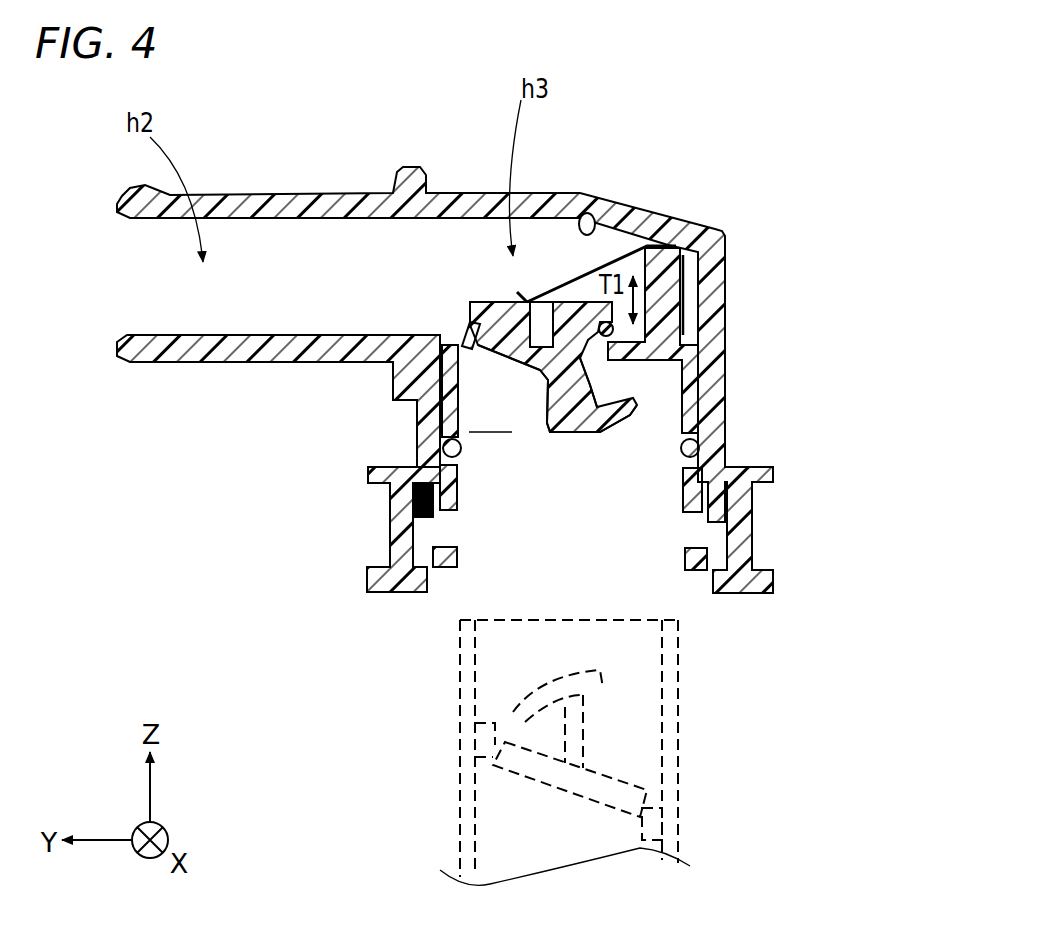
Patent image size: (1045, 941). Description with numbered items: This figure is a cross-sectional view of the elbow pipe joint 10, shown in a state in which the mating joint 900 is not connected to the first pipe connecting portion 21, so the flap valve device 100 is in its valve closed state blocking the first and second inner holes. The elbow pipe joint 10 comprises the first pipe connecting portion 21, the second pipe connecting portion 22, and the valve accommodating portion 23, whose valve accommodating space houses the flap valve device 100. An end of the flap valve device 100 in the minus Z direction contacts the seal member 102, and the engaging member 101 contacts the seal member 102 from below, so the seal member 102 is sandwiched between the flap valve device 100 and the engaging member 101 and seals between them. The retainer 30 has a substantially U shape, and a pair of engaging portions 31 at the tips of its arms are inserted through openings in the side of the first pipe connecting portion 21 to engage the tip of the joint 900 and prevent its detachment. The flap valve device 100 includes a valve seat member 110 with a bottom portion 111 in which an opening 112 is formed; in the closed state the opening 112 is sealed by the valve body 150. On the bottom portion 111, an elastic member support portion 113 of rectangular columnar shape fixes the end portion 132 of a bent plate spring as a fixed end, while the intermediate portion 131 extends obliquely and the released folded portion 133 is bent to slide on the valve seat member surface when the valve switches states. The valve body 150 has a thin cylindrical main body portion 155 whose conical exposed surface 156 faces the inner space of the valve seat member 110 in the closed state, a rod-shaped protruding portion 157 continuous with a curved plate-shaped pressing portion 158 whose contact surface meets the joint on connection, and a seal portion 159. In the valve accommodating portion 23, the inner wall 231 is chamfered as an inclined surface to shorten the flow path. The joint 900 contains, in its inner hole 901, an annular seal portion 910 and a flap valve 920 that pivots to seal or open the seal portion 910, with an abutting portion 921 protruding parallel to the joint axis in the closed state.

The elbow pipe joint 10 is at (478, 347).
The first pipe connecting portion 21 is at (762, 511).
The second pipe connecting portion 22 is at (229, 193).
The valve accommodating portion 23 is at (726, 287).
The retainer 30 is at (752, 538).
The engaging portions 31 is at (457, 557).
The flap valve device 100 is at (386, 350).
The engaging member 101 is at (440, 497).
The seal member 102 is at (443, 450).
The valve seat member 110 is at (709, 380).
The bottom portion 111 is at (634, 354).
The opening 112 is at (613, 342).
The elastic member support portion 113 is at (664, 332).
The intermediate portion 131 is at (608, 262).
The end portion 132 is at (684, 258).
The folded portion 133 is at (520, 291).
The valve body 150 is at (491, 309).
The main body portion 155 is at (480, 300).
The exposed surface 156 is at (498, 355).
The protruding portion 157 is at (543, 390).
The pressing portion 158 is at (587, 434).
The seal portion 159 is at (462, 327).
The inner wall 231 is at (591, 213).
The joint 900 is at (580, 748).
The inner hole 901 is at (588, 852).
The seal portion 910 is at (663, 828).
The flap valve 920 is at (524, 790).
The abutting portion 921 is at (612, 688).